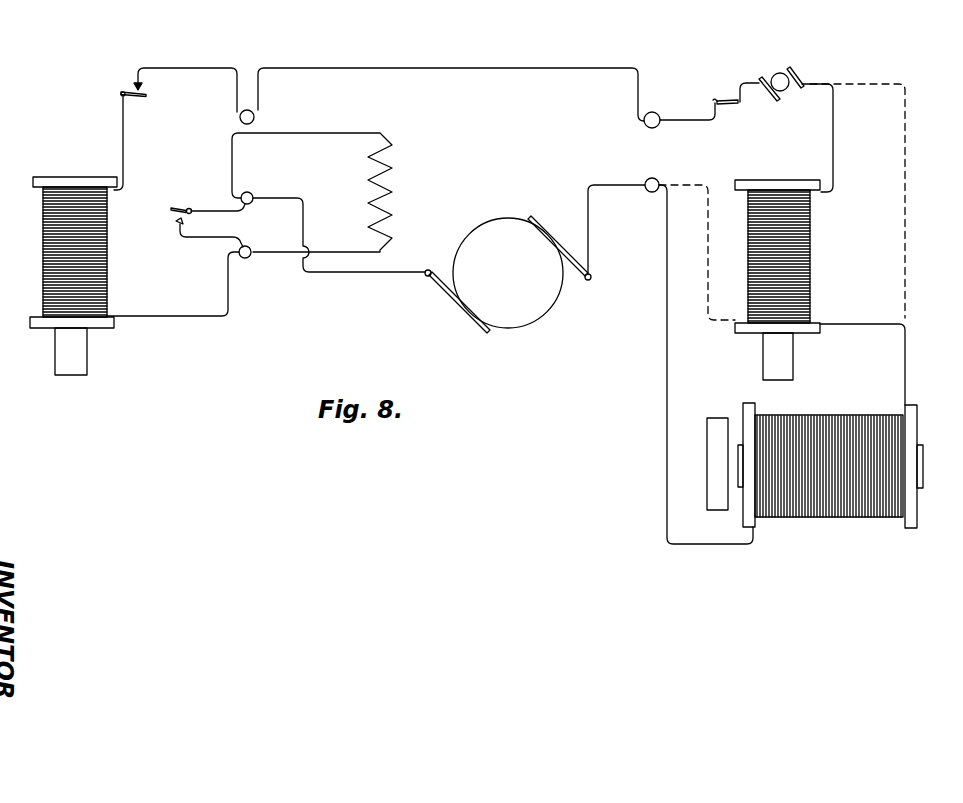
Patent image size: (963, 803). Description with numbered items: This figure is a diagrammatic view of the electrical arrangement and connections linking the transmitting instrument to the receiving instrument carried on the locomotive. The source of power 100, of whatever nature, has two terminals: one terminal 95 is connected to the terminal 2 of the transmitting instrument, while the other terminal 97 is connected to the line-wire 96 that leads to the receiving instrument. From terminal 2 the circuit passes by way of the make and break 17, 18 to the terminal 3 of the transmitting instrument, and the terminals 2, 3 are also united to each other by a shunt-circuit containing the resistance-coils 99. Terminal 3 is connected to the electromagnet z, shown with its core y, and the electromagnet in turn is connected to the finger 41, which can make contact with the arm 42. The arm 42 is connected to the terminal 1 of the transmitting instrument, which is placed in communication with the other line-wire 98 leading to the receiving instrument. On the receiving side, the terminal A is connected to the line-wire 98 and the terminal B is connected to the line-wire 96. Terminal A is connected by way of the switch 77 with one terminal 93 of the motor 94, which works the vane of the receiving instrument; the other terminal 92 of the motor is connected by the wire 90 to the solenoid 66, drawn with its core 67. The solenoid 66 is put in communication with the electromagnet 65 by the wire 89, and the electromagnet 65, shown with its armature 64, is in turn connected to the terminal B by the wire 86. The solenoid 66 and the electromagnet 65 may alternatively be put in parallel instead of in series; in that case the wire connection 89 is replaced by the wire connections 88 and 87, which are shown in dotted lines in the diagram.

The terminal 1 is at (254, 120).
The terminal 2 is at (250, 194).
The terminal 3 is at (186, 281).
The make and break 17 is at (177, 222).
The make and break 18 is at (208, 199).
The finger 41 is at (129, 97).
The arm 42 is at (137, 80).
The armature 64 is at (707, 453).
The electromagnet 65 is at (833, 505).
The solenoid 66 is at (800, 258).
The core 67 is at (763, 359).
The switch 77 is at (720, 96).
The wire 86 is at (690, 364).
The wire connection 87 is at (905, 240).
The wire connection 88 is at (708, 268).
The wire 89 is at (881, 327).
The wire 90 is at (834, 144).
The motor terminal 92 is at (801, 78).
The motor terminal 93 is at (759, 101).
The motor 94 is at (781, 77).
The terminal of source of power 95 is at (457, 300).
The line-wire 96 is at (621, 181).
The terminal of source of power 97 is at (553, 242).
The line-wire 98 is at (451, 94).
The resistance-coils 99 is at (405, 179).
The source of power 100 is at (508, 273).
The terminal A is at (653, 107).
The terminal B is at (644, 201).
The electromagnet z is at (43, 246).
The core y is at (71, 351).